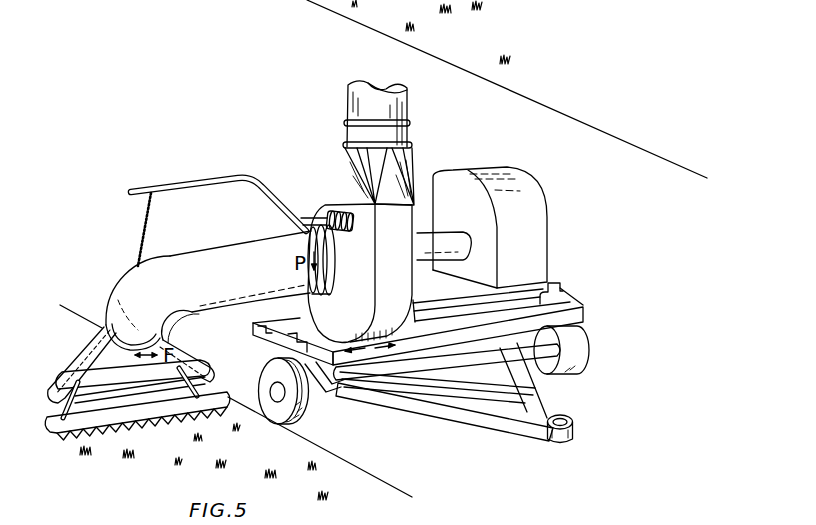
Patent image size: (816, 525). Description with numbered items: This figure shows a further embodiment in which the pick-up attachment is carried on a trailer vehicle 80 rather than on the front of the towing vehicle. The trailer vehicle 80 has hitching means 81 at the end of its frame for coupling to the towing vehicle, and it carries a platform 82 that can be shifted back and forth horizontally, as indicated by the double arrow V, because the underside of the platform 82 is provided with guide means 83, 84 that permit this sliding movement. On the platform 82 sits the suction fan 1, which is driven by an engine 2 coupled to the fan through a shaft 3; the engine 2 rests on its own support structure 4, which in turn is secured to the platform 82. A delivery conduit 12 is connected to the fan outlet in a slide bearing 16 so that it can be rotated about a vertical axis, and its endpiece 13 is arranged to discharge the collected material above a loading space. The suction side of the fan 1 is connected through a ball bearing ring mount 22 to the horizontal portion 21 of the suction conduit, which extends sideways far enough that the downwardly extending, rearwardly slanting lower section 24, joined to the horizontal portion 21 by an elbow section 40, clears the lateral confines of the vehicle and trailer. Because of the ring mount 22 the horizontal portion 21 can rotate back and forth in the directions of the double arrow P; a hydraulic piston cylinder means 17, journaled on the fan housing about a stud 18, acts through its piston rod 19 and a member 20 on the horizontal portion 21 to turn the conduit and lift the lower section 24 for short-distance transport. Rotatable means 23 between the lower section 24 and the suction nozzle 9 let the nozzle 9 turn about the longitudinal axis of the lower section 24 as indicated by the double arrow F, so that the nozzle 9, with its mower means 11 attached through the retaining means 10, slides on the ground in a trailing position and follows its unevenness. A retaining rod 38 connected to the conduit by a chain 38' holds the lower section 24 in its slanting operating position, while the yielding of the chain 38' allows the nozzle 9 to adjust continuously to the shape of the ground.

The suction fan 1 is at (367, 304).
The engine 2 is at (457, 183).
The shaft 3 is at (467, 255).
The support structure 4 is at (553, 281).
The suction nozzle 9 is at (78, 355).
The retaining means 10 is at (102, 381).
The mower means 11 is at (165, 418).
The delivery conduit 12 is at (402, 108).
The endpiece 13 is at (636, 514).
The slide bearing 16 is at (344, 123).
The hydraulic piston cylinder means 17 is at (350, 230).
The stud 18 is at (335, 251).
The piston rod 19 is at (324, 212).
The member 20 is at (305, 219).
The horizontal portion 21 is at (241, 300).
The ball bearing ring mount 22 is at (321, 290).
The rotatable means 23 is at (100, 328).
The lower section 24 is at (127, 293).
The retaining rod 38 is at (218, 193).
The chain 38' is at (123, 229).
The elbow section 40 is at (163, 278).
The trailer vehicle 80 is at (597, 312).
The hitching means 81 is at (548, 400).
The platform 82 is at (572, 302).
The guide means 83 is at (252, 347).
The guide means 84 is at (299, 343).